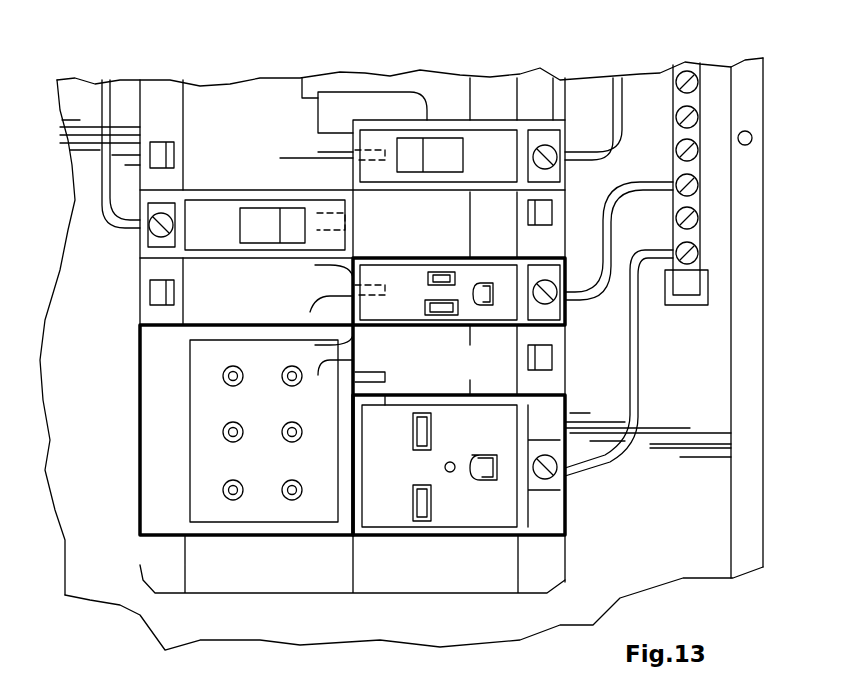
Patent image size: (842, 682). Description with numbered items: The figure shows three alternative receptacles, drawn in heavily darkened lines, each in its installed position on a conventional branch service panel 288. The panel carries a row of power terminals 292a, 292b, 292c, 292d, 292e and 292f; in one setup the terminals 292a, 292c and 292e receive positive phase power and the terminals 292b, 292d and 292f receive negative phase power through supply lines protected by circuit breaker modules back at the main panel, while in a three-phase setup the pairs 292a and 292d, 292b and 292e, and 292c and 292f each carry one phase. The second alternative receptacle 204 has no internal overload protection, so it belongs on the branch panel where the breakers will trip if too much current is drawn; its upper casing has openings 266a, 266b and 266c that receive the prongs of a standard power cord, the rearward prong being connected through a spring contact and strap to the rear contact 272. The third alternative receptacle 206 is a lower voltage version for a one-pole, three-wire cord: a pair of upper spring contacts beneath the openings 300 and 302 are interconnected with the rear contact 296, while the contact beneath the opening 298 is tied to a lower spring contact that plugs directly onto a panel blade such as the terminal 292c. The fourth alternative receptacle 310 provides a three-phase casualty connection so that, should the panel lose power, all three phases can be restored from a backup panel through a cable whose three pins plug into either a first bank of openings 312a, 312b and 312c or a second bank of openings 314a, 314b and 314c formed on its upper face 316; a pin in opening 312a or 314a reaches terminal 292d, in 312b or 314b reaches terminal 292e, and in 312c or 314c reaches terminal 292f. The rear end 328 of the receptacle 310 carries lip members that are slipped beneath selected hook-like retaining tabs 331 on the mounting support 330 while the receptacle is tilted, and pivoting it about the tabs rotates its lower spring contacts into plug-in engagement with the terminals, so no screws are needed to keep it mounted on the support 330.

The branch service panel 288 is at (85, 62).
The hook-like retaining tabs 331 is at (162, 145).
The mounting support 330 is at (150, 312).
The power terminal 292a is at (318, 152).
The power terminal 292b is at (330, 213).
The power terminal 292c is at (310, 290).
The power terminal 292d is at (370, 383).
The power terminal 292e is at (375, 445).
The power terminal 292f is at (375, 525).
The opening 298 is at (443, 270).
The opening 302 is at (450, 302).
The opening 300 is at (470, 333).
The second alternative receptacle 204 is at (485, 548).
The third alternative receptacle 206 is at (580, 330).
The opening 266a is at (431, 432).
The opening 266b is at (427, 512).
The opening 266c is at (488, 479).
The rear contact 272 is at (565, 476).
The rear contact 296 is at (565, 310).
The rear end 328 is at (140, 517).
The opening 312a is at (283, 367).
The opening 312b is at (282, 430).
The opening 312c is at (282, 490).
The opening 314a is at (222, 377).
The opening 314b is at (223, 432).
The opening 314c is at (223, 490).
The upper face 316 is at (313, 508).
The fourth alternative receptacle 310 is at (318, 538).